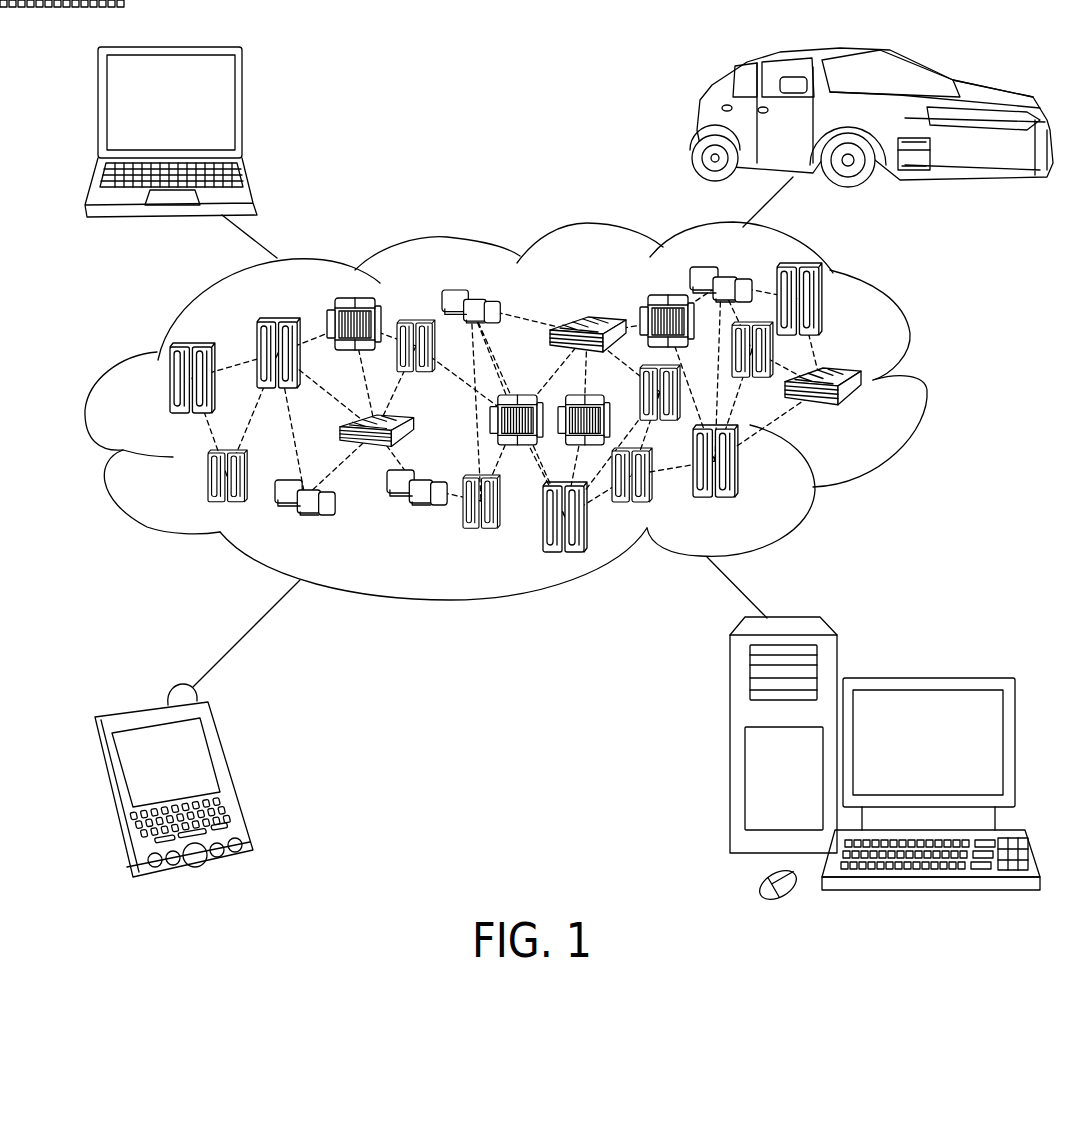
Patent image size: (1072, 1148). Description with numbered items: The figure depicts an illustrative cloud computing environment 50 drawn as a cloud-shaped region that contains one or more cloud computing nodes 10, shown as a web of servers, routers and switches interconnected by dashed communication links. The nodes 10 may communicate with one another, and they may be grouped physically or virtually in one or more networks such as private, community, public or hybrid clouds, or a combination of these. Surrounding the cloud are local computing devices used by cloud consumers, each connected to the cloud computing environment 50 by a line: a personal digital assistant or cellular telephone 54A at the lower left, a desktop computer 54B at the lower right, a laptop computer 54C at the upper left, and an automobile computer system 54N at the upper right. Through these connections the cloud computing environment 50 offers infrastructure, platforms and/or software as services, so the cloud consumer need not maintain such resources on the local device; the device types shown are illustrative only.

The cloud computing node 10 is at (868, 418).
The cloud computing environment 50 is at (535, 454).
The personal digital assistant or cellular telephone 54A is at (232, 777).
The desktop computer 54B is at (925, 678).
The laptop computer 54C is at (245, 112).
The automobile computer system 54N is at (697, 130).